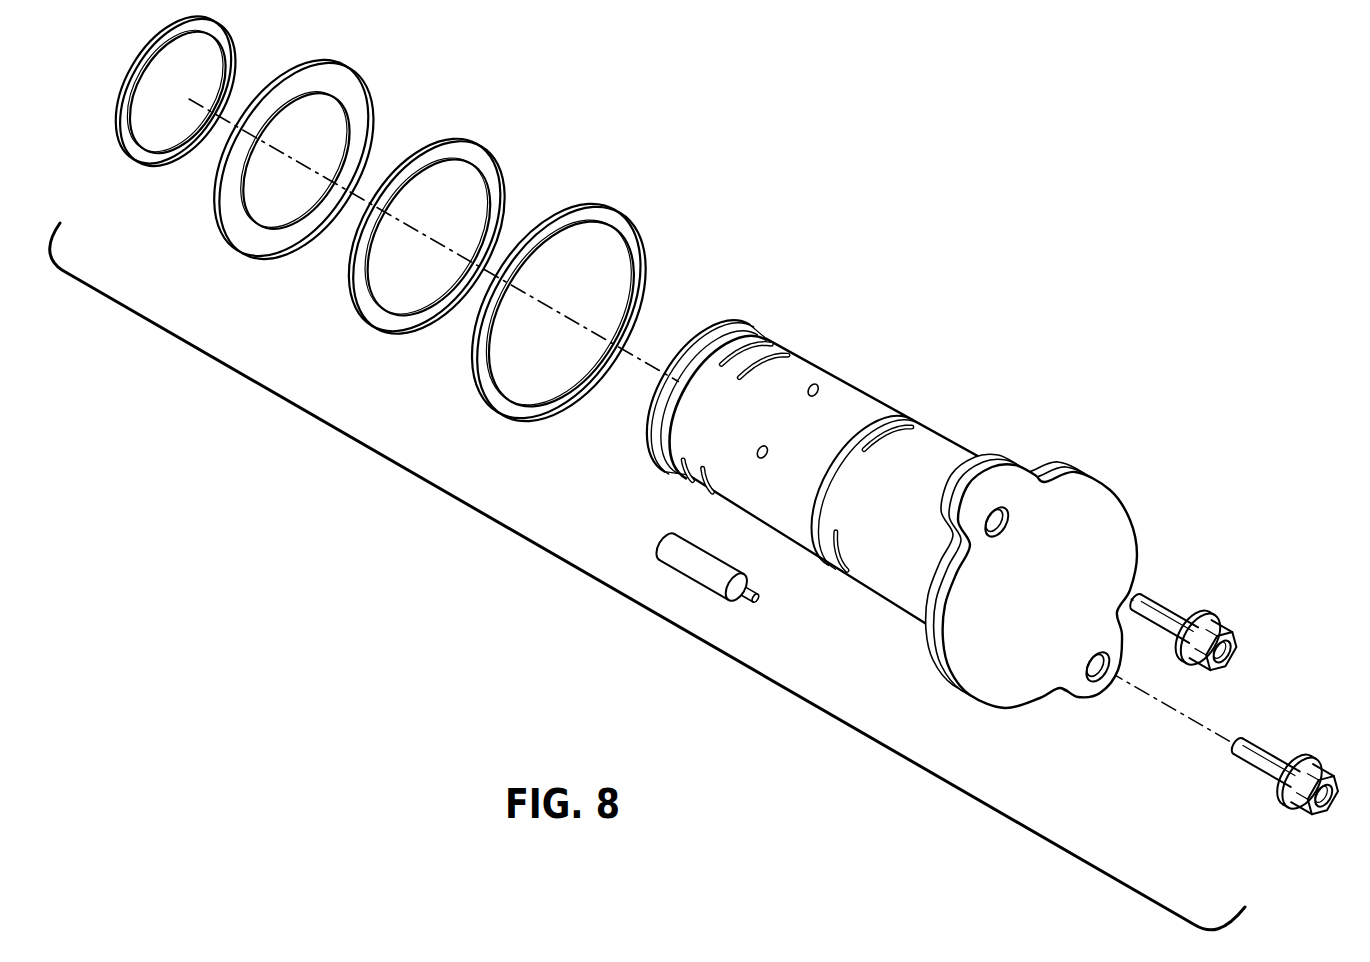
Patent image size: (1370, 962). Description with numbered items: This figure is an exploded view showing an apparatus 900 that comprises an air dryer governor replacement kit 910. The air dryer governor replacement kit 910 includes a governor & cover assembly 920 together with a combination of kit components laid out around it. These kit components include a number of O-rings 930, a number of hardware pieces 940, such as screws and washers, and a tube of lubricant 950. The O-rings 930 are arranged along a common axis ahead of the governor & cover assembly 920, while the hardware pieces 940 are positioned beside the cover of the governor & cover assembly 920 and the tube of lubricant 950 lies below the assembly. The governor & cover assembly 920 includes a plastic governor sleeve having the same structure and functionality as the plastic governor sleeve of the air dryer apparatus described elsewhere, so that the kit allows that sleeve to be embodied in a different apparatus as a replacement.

The apparatus 900 is at (806, 233).
The air dryer governor replacement kit 910 is at (648, 609).
The governor & cover assembly 920 is at (876, 397).
The O-rings 930 is at (135, 158).
The hardware pieces 940 is at (366, 326).
The tube of lubricant 950 is at (742, 598).